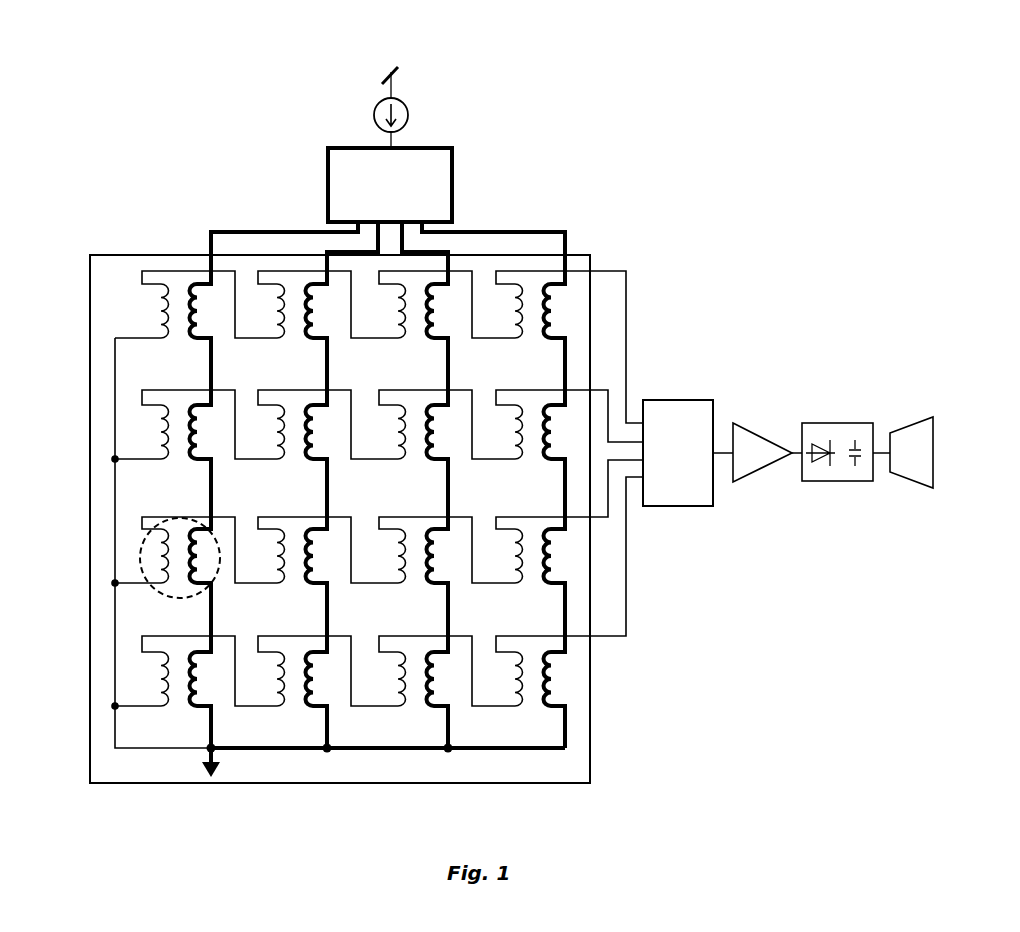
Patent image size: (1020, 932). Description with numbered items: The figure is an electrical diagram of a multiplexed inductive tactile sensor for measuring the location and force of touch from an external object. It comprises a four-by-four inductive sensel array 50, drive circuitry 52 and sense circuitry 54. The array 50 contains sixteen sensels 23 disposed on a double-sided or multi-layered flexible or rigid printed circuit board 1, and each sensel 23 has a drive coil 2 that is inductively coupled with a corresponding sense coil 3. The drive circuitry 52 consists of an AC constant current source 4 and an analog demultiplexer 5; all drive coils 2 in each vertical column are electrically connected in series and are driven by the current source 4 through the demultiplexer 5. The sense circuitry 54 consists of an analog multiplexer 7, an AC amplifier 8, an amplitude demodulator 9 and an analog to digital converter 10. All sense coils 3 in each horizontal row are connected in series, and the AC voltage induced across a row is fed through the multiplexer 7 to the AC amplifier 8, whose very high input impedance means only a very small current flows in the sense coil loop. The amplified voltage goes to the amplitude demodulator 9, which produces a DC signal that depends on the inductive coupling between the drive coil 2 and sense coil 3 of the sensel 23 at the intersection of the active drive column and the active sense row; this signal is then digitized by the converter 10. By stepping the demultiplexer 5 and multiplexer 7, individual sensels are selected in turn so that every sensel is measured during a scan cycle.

The printed circuit board 1 is at (90, 297).
The drive coil 2 is at (183, 593).
The sense coil 3 is at (160, 553).
The sensel 23 is at (140, 567).
The AC current source 4 is at (409, 115).
The demultiplexer 5 is at (452, 185).
The multiplexer 7 is at (672, 506).
The AC amplifier 8 is at (750, 476).
The amplitude demodulator 9 is at (830, 481).
The analog to digital converter 10 is at (907, 478).
The inductive sensel array 50 is at (190, 808).
The drive circuitry 52 is at (237, 182).
The sense circuitry 54 is at (883, 192).